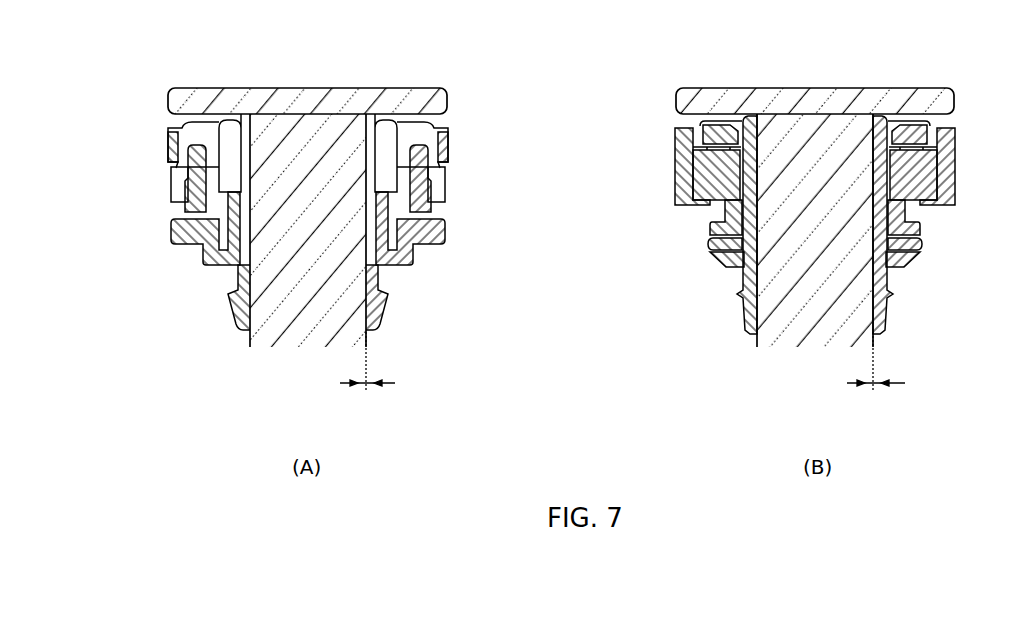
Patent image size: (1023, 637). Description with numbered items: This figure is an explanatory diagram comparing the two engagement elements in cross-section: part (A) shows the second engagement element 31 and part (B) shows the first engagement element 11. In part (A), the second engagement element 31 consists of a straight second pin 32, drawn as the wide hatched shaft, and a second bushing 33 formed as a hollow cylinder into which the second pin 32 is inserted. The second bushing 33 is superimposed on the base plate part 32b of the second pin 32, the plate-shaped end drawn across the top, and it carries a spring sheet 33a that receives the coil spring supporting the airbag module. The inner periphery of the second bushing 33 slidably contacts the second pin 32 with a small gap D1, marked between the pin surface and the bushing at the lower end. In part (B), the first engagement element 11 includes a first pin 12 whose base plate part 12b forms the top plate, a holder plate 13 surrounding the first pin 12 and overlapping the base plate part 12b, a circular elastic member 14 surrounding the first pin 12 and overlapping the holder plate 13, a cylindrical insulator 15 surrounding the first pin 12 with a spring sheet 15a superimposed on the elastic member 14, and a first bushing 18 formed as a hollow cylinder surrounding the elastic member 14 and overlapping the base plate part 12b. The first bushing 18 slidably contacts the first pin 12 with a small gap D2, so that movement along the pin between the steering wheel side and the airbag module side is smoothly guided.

The first engagement element 11 is at (660, 310).
The first pin 12 is at (884, 87).
The base plate part 12b is at (699, 98).
The holder plate 13 is at (930, 133).
The elastic member 14 is at (937, 185).
The insulator 15 is at (888, 281).
The spring sheet 15a is at (727, 268).
The first bushing 18 is at (675, 184).
The second engagement element 31 is at (490, 174).
The second pin 32 is at (313, 87).
The base plate part 32b is at (426, 99).
The second bushing 33 is at (450, 195).
The spring sheet 33a is at (396, 266).
The gap D1 is at (383, 364).
The gap D2 is at (891, 364).